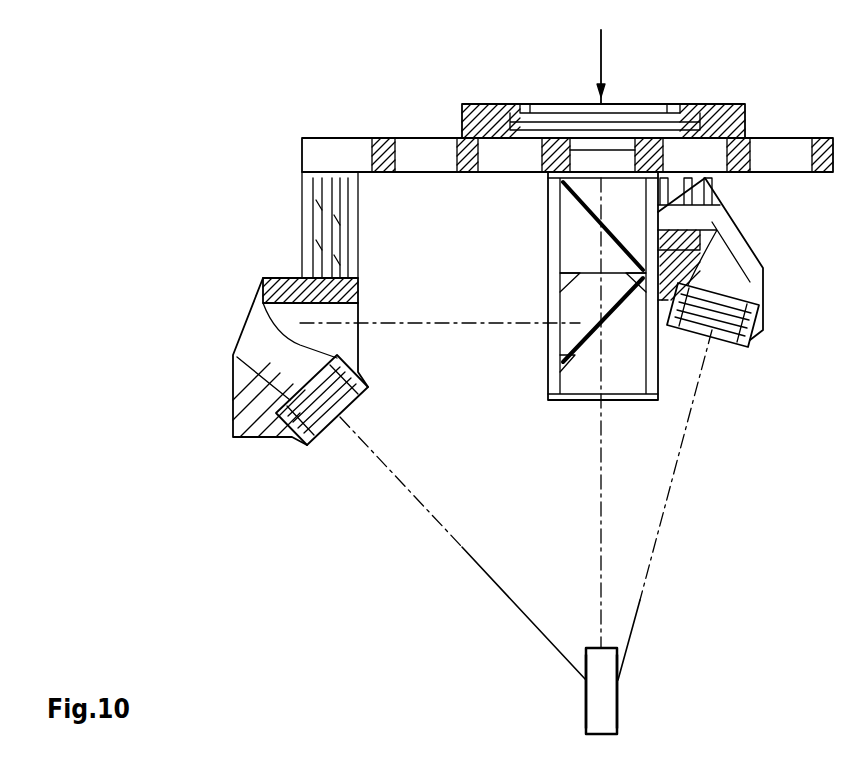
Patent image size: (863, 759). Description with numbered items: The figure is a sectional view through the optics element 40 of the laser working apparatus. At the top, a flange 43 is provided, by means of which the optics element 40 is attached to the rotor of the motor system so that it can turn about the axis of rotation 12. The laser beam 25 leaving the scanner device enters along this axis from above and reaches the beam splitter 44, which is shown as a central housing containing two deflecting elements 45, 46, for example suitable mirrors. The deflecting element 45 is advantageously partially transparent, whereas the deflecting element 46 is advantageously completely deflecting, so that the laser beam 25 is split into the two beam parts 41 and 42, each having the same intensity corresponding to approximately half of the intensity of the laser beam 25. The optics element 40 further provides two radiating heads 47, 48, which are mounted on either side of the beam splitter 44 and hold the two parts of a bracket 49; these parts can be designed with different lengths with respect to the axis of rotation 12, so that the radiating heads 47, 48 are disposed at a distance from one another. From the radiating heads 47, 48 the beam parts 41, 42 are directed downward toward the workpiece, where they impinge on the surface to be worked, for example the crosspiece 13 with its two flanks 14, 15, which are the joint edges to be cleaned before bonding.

The axis of rotation 12 is at (603, 497).
The crosspiece 13 is at (583, 646).
The flank 14 is at (617, 712).
The flank 15 is at (586, 700).
The laser beam 25 is at (605, 70).
The optics element 40 is at (222, 198).
The beam part 41 is at (667, 487).
The beam part 42 is at (428, 505).
The flange 43 is at (475, 122).
The beam splitter 44 is at (541, 282).
The deflecting element 45 is at (590, 208).
The deflecting element 46 is at (586, 346).
The radiating head 47 is at (735, 262).
The radiating head 48 is at (258, 352).
The bracket 49 is at (374, 138).